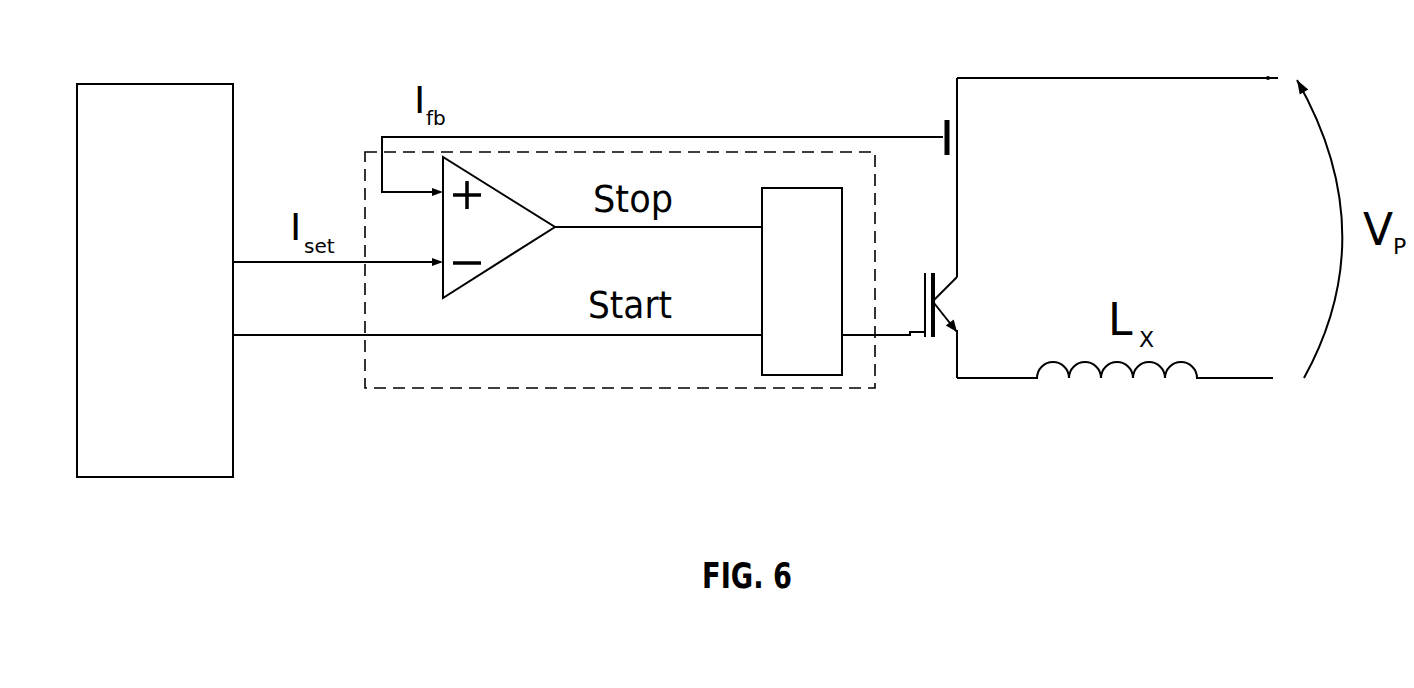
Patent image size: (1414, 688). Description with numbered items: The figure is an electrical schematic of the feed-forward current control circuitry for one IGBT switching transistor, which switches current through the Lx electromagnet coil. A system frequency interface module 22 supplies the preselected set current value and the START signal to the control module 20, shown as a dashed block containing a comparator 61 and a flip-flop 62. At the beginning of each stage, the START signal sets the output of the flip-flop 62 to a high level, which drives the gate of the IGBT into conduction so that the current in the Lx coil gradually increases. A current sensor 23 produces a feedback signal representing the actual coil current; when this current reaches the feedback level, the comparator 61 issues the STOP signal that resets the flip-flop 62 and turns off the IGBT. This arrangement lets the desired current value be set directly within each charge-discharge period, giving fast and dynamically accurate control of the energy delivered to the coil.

The system frequency interface module 22 is at (223, 453).
The control module 20 is at (555, 388).
The comparator 61 is at (457, 277).
The flip-flop 62 is at (772, 360).
The current sensor 23 is at (935, 118).